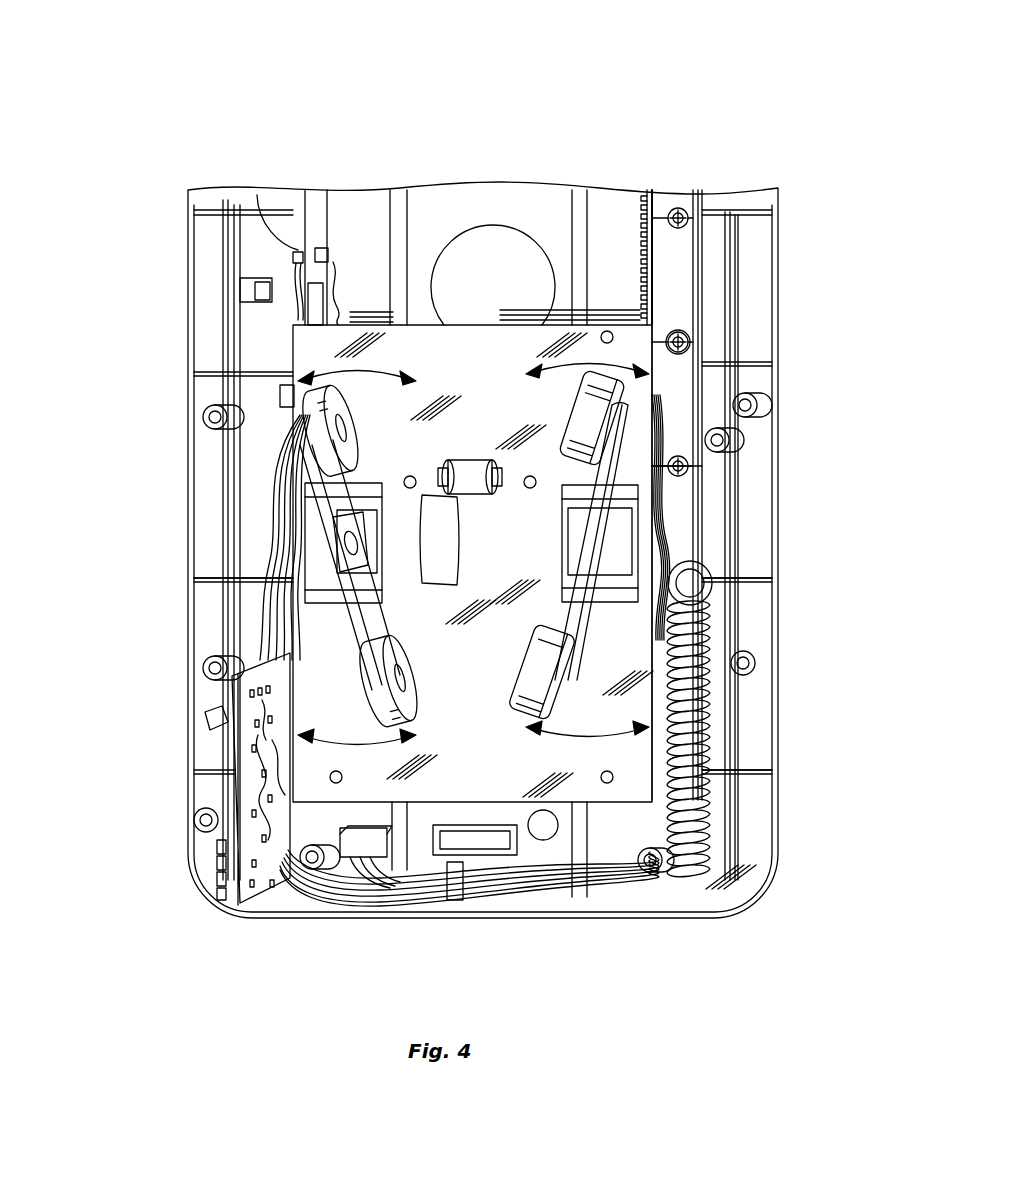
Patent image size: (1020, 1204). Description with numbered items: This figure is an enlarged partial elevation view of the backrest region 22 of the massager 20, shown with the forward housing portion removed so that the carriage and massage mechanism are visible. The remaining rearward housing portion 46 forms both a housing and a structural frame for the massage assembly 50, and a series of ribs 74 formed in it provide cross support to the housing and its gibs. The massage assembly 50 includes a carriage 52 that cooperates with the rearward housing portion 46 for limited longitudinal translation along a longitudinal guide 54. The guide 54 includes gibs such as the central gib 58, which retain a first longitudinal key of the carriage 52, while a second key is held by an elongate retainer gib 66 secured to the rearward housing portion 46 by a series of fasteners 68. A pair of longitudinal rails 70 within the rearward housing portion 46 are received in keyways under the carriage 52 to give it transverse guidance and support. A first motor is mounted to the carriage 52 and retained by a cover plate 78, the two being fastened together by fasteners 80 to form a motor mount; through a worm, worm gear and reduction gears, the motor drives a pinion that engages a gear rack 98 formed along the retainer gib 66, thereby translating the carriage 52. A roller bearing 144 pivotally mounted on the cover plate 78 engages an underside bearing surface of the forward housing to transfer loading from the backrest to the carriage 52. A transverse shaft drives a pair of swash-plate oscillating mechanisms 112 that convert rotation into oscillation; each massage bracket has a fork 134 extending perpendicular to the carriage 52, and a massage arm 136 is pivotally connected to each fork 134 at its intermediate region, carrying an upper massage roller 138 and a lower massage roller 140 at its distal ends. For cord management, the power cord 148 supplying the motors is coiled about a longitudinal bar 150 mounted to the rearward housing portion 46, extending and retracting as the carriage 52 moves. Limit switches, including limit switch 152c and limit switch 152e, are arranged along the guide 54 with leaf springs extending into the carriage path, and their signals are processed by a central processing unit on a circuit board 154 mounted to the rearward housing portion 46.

The telephone 20 is at (500, 64).
The backrest region 22 is at (557, 90).
The rearward housing portion 46 is at (780, 213).
The massage assembly 50 is at (650, 317).
The carriage 52 is at (630, 317).
The longitudinal guide 54 is at (310, 204).
The central gib 58 is at (298, 233).
The elongate retainer gib 66 is at (673, 315).
The fasteners 68 is at (690, 342).
The longitudinal rail 70 is at (398, 200).
The ribs 74 is at (703, 770).
The cover plate 78 is at (490, 347).
The fasteners 80 is at (607, 331).
The gear rack 98 is at (645, 217).
The oscillating mechanism 112 is at (295, 583).
The fork 134 is at (342, 547).
The massage arm 136 is at (330, 593).
The upper massage roller 138 is at (280, 405).
The lower massage roller 140 is at (365, 708).
The roller bearing 144 is at (470, 470).
The power cord 148 is at (710, 640).
The longitudinal bar 150 is at (693, 482).
The limit switch 152c is at (293, 305).
The limit switch 152e is at (363, 850).
The circuit board 154 is at (238, 788).